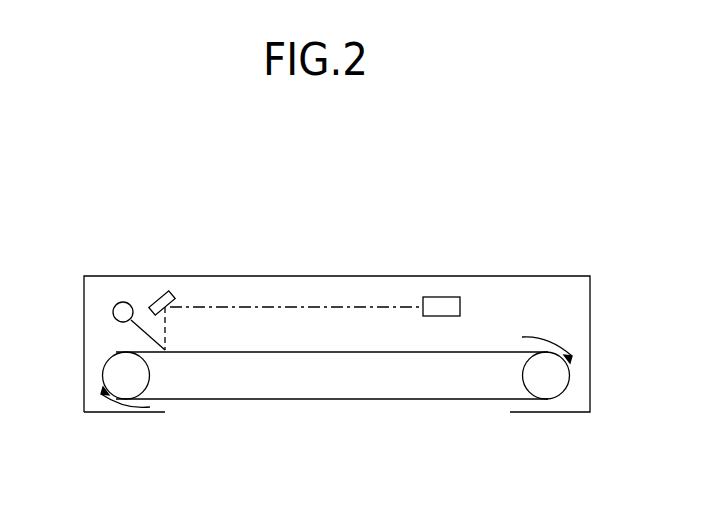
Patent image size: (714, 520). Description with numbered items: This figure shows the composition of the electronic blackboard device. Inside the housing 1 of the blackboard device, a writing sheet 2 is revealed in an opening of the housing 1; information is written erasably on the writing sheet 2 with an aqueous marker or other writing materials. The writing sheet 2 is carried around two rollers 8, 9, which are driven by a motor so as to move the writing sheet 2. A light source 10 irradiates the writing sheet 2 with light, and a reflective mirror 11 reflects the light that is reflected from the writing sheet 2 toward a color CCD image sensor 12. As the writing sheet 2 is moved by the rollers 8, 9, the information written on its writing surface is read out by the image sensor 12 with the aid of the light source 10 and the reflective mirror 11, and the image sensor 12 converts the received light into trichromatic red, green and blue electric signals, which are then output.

The housing 1 is at (572, 274).
The writing sheet 2 is at (328, 399).
The roller 8 is at (112, 375).
The roller 9 is at (557, 382).
The light source 10 is at (123, 302).
The reflective mirror 11 is at (172, 294).
The color CCD image sensor 12 is at (443, 297).